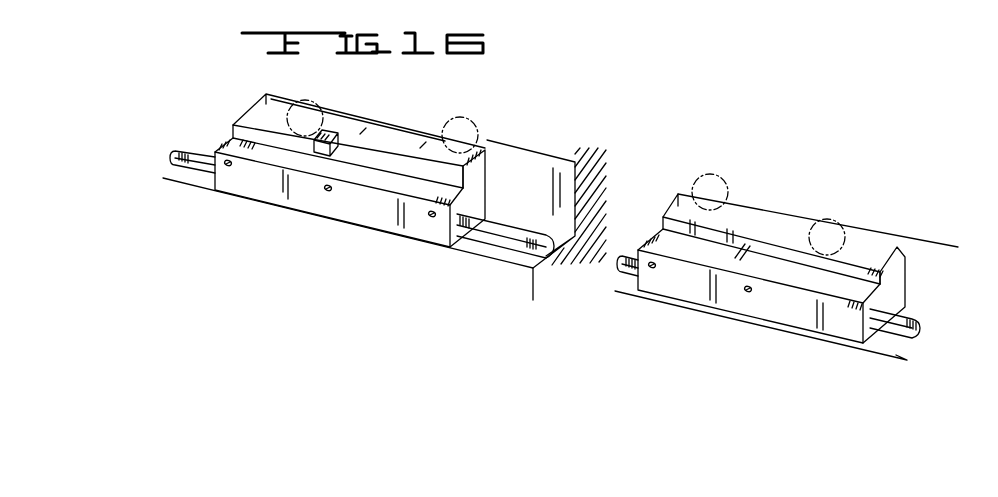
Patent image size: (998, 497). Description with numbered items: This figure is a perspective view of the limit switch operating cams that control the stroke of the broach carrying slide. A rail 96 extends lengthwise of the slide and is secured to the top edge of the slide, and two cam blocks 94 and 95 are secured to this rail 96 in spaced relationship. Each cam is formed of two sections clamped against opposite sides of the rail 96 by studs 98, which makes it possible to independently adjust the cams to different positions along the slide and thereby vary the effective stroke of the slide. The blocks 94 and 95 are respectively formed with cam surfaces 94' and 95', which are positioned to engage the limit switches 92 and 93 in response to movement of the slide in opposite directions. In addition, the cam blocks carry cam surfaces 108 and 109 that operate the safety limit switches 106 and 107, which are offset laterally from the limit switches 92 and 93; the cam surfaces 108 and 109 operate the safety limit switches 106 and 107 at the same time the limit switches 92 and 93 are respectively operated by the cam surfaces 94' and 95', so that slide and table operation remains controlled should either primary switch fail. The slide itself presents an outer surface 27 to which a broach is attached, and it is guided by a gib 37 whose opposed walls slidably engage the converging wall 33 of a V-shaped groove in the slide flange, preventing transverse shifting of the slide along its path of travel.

The outer surface 27 is at (531, 285).
The converging wall 33 is at (546, 217).
The gib 37 is at (585, 220).
The limit switch 92 is at (465, 116).
The limit switch 93 is at (728, 183).
The cam block 94 is at (375, 205).
The cam surface 94' is at (502, 141).
The cam block 95 is at (771, 293).
The cam surface 95' is at (771, 235).
The rail 96 is at (188, 160).
The stud 98 is at (232, 165).
The safety limit switch 106 is at (322, 106).
The safety limit switch 107 is at (840, 217).
The cam surface 108 is at (248, 122).
The cam surface 109 is at (873, 250).